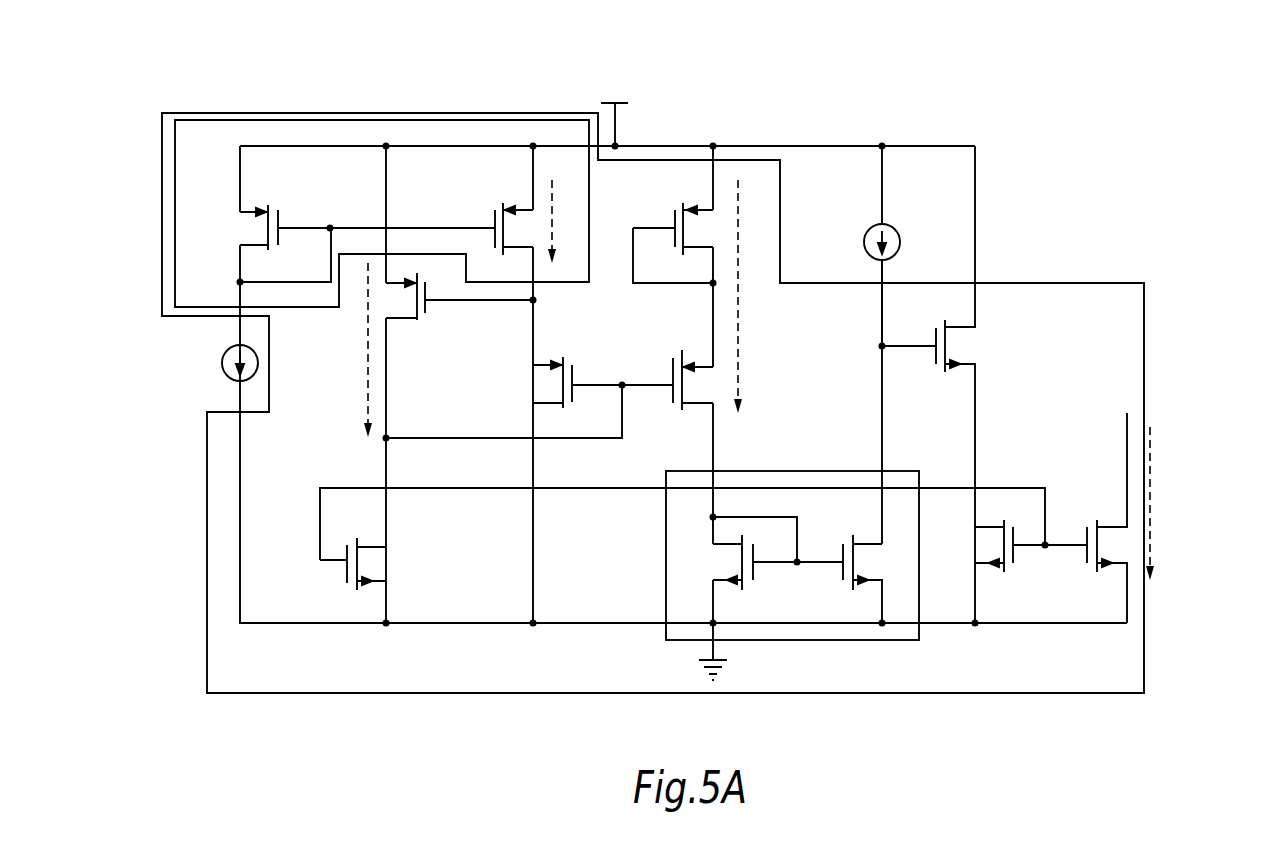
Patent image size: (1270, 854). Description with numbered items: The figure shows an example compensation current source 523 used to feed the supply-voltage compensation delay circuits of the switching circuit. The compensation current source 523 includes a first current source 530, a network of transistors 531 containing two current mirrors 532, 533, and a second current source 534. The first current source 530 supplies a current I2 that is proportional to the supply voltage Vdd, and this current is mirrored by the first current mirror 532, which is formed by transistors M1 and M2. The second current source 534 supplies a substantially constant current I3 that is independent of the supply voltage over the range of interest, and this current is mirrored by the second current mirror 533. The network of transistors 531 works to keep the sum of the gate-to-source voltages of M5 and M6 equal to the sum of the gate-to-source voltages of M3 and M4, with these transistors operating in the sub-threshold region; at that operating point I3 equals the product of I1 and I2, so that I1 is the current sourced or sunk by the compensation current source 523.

The compensation current source 523 is at (1180, 98).
The first current source 530 is at (258, 363).
The network of transistors 531 is at (335, 113).
The first current mirror 532 is at (381, 118).
The second current mirror 533 is at (806, 470).
The second current source 534 is at (864, 242).